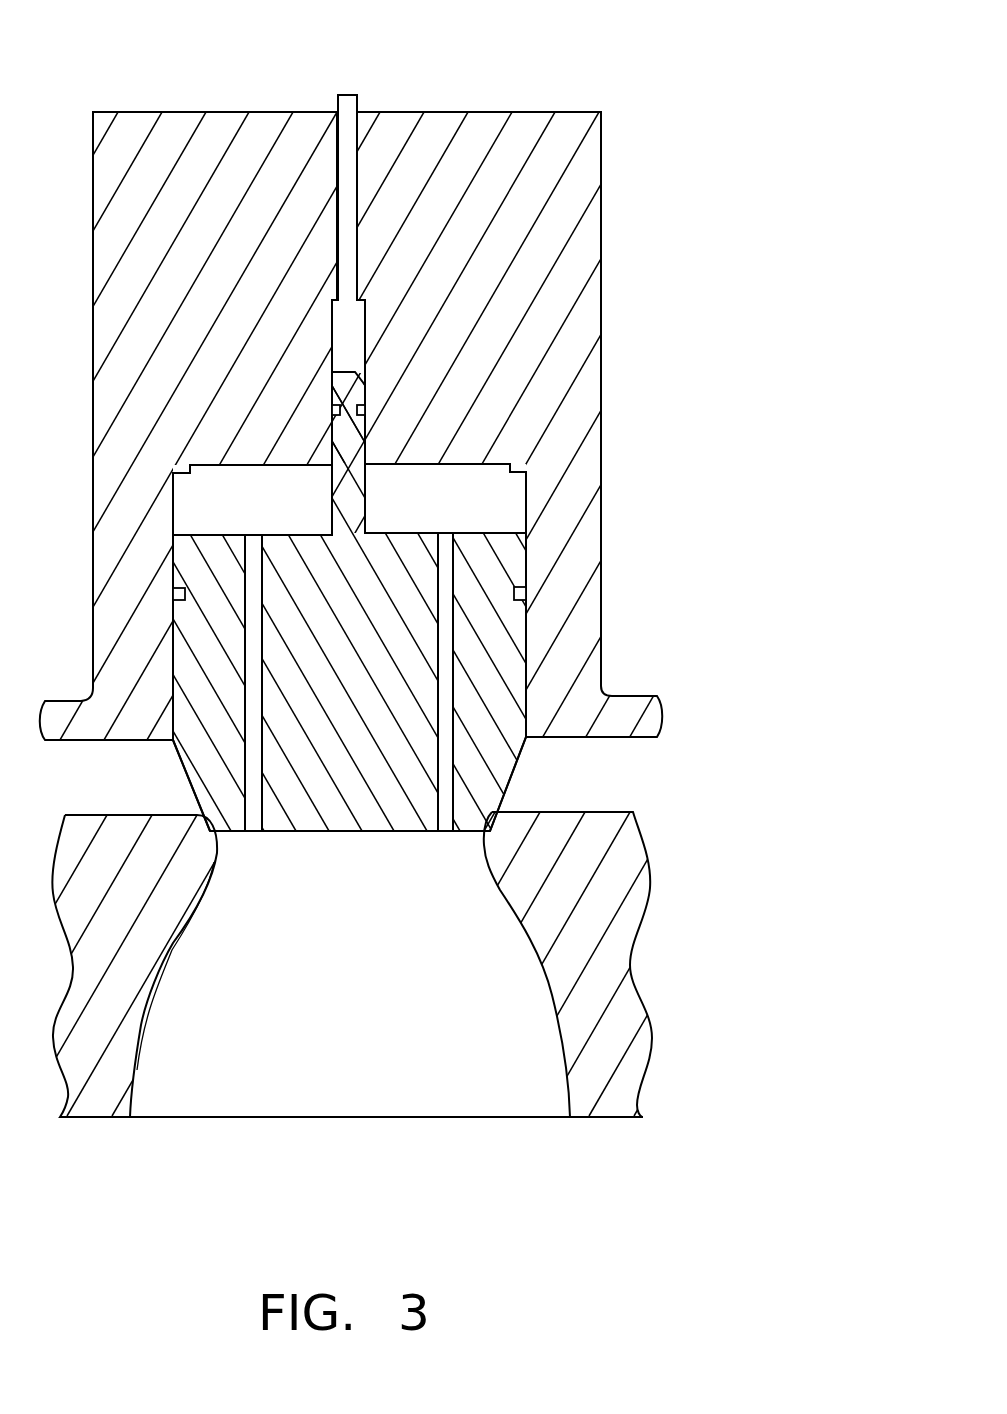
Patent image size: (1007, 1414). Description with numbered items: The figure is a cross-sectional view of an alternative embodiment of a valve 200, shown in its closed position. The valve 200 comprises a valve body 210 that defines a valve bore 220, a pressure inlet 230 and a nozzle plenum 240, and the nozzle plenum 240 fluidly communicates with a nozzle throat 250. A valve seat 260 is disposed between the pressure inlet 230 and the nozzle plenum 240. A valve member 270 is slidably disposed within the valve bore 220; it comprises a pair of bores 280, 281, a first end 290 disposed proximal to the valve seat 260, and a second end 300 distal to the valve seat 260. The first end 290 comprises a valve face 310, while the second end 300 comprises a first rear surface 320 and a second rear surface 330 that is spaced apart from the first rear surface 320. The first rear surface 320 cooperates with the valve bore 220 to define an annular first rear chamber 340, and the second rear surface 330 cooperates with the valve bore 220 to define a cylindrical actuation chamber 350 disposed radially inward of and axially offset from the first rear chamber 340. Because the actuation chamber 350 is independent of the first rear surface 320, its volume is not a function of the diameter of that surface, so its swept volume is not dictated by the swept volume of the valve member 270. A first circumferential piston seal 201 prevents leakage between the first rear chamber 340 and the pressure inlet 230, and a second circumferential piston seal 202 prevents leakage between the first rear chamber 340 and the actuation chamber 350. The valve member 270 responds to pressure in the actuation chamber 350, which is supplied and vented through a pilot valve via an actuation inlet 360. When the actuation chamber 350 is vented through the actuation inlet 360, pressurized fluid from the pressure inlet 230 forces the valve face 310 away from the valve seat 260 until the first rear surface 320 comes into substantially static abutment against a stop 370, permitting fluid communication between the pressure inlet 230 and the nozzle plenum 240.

The valve 200 is at (540, 66).
The first circumferential piston seal 201 is at (520, 593).
The second circumferential piston seal 202 is at (363, 407).
The valve body 210 is at (562, 522).
The valve bore 220 is at (178, 502).
The pressure inlet 230 is at (95, 793).
The nozzle plenum 240 is at (400, 865).
The nozzle throat 250 is at (490, 864).
The valve seat 260 is at (197, 818).
The valve member 270 is at (500, 640).
The bore 280 is at (255, 705).
The bore 281 is at (447, 749).
The first end 290 is at (415, 832).
The second end 300 is at (500, 558).
The valve face 310 is at (193, 786).
The first rear surface 320 is at (208, 537).
The second rear surface 330 is at (348, 370).
The first rear chamber 340 is at (466, 507).
The actuation chamber 350 is at (350, 320).
The actuation inlet 360 is at (343, 142).
The stop 370 is at (519, 476).